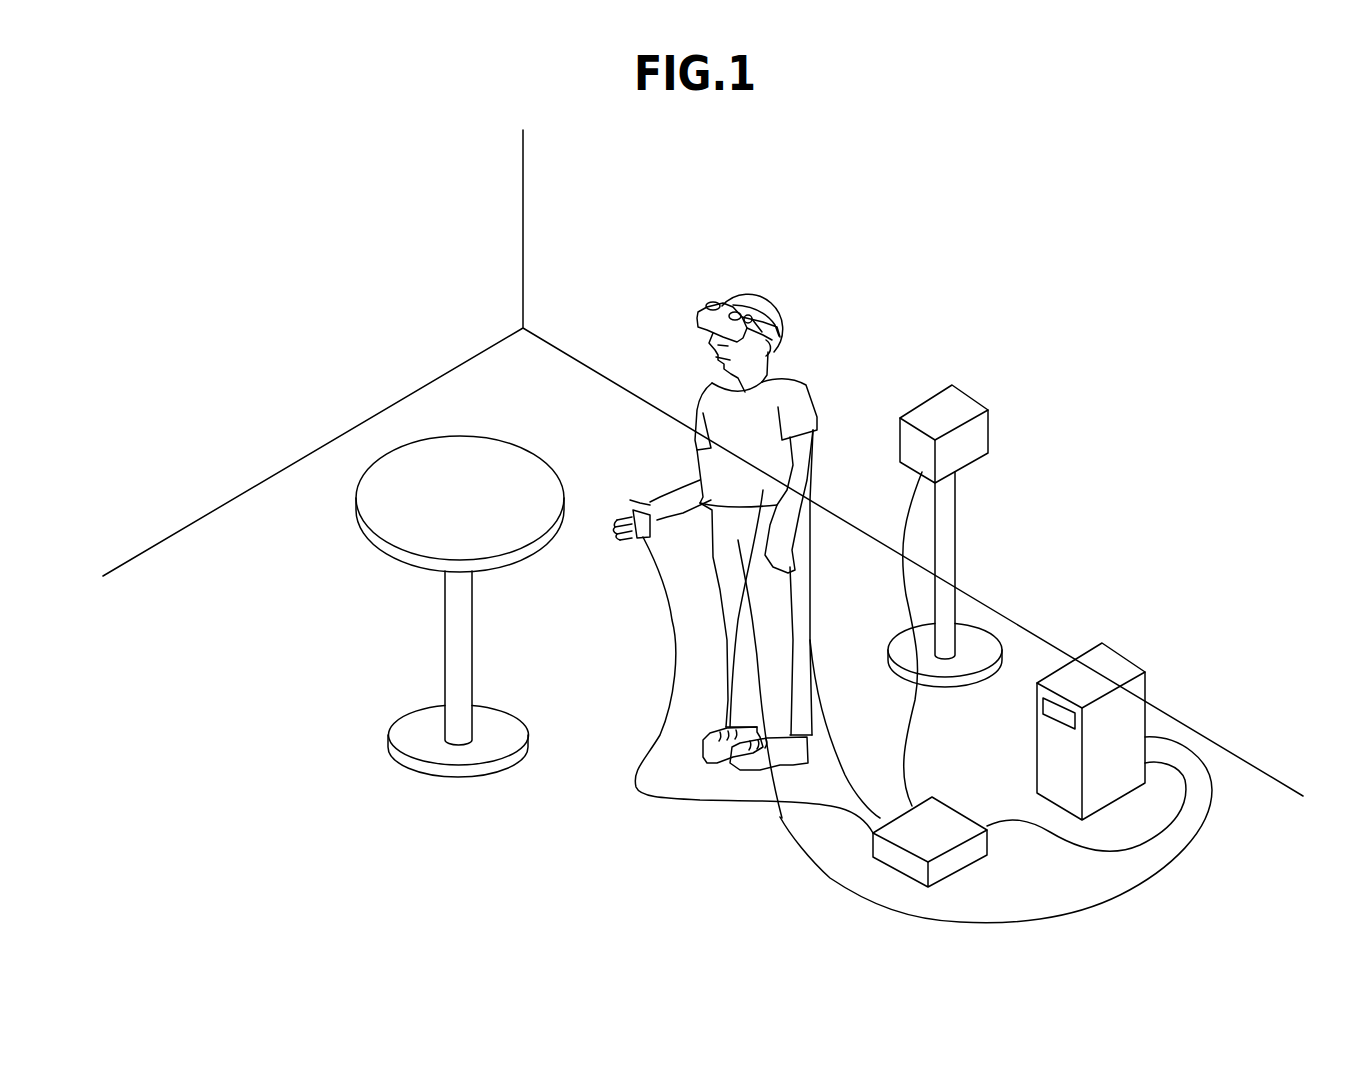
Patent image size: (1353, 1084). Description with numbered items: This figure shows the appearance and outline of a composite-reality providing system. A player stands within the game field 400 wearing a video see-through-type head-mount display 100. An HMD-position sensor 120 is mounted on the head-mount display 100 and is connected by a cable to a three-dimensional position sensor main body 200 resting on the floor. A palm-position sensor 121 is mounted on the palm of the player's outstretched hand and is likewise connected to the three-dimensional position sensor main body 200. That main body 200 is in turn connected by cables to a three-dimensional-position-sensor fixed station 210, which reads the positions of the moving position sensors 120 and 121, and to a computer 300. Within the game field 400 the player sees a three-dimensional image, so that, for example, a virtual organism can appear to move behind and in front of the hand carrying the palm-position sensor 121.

The head-mount display 100 is at (700, 318).
The HMD-position sensor 120 is at (750, 312).
The palm-position sensor 121 is at (657, 513).
The three-dimensional position sensor main body 200 is at (933, 813).
The three-dimensional-position-sensor fixed station 210 is at (990, 437).
The computer 300 is at (1120, 655).
The game field 400 is at (372, 548).